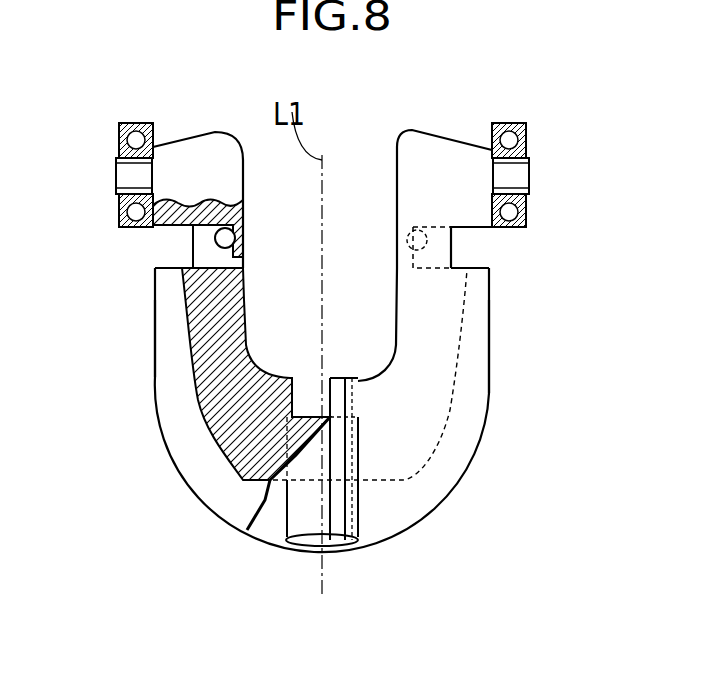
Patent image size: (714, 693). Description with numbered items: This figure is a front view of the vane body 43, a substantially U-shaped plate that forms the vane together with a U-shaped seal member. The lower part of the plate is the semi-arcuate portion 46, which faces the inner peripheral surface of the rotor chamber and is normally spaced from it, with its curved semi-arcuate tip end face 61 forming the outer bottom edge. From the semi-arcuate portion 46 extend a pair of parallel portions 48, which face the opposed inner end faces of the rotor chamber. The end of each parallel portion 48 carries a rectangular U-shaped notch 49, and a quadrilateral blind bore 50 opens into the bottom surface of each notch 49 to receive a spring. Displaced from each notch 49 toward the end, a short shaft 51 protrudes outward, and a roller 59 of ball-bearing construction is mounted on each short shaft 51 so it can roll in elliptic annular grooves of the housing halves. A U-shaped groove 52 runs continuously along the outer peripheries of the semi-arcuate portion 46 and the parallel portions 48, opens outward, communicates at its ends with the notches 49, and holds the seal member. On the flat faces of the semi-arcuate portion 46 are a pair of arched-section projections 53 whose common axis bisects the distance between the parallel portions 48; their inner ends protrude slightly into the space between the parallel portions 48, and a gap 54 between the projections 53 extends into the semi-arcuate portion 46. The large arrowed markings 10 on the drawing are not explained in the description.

The steering unit 10 is at (389, 343).
The vane body 43 is at (489, 372).
The semi-arcuate portion 46 is at (382, 515).
The parallel portions 48 is at (155, 342).
The rectangular U-shaped notch 49 is at (153, 232).
The quadrilateral blind bore 50 is at (245, 253).
The short shaft 51 is at (132, 172).
The U-shaped groove 52 is at (212, 485).
The projections 53 is at (338, 385).
The gap 54 is at (300, 385).
The roller 59 is at (127, 123).
The semi-arcuate tip end face 61 is at (330, 546).